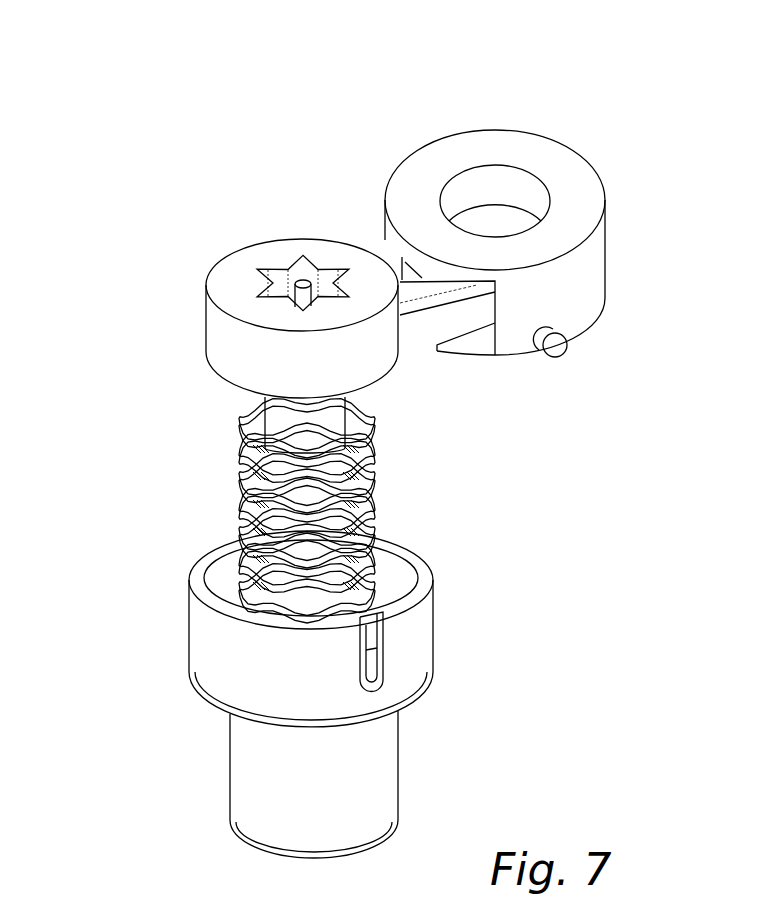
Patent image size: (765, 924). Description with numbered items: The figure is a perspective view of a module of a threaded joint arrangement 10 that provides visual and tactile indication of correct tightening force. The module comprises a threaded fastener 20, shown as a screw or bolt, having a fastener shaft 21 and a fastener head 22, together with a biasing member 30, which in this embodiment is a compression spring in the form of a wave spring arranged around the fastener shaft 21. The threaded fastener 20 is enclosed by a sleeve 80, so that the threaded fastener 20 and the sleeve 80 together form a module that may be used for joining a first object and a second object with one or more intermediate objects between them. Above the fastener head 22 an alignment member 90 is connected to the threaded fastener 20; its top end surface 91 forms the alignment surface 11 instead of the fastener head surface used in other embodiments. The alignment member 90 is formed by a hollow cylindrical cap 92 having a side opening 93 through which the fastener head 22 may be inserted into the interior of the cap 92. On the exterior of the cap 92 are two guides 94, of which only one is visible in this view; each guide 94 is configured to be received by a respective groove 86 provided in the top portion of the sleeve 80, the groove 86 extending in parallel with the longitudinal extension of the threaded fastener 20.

The threaded joint arrangement 10 is at (170, 153).
The threaded fastener 20 is at (262, 205).
The fastener shaft 21 is at (333, 423).
The fastener head 22 is at (237, 347).
The biasing member 30 is at (243, 497).
The sleeve 80 is at (412, 644).
The groove 86 is at (353, 660).
The alignment member 90 is at (540, 86).
The alignment surface 11 is at (426, 165).
The top end surface 91 is at (478, 156).
The hollow cylindrical cap 92 is at (592, 288).
The side opening 93 is at (436, 326).
The guide 94 is at (555, 348).